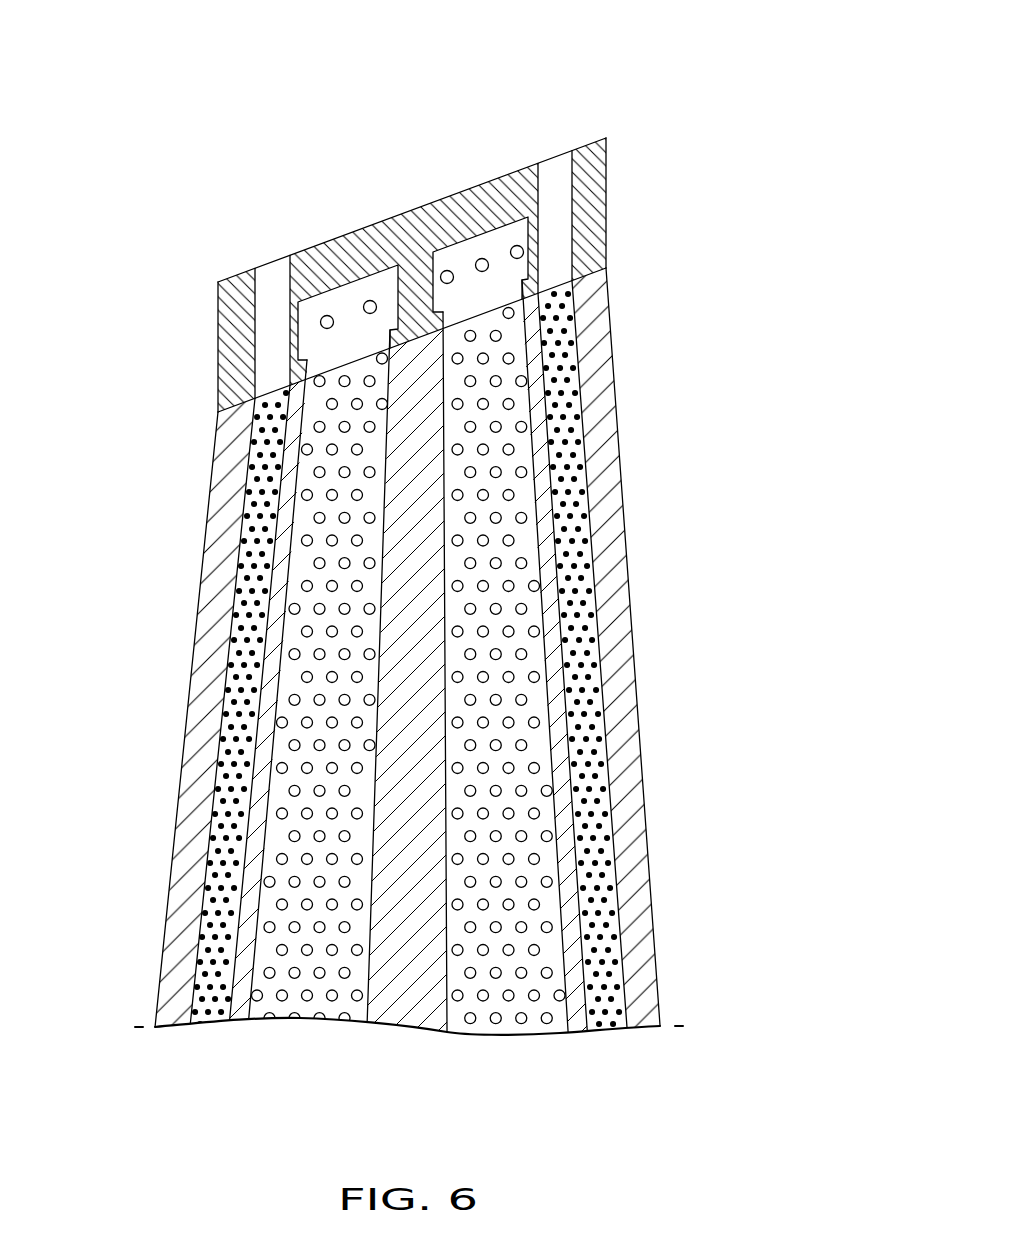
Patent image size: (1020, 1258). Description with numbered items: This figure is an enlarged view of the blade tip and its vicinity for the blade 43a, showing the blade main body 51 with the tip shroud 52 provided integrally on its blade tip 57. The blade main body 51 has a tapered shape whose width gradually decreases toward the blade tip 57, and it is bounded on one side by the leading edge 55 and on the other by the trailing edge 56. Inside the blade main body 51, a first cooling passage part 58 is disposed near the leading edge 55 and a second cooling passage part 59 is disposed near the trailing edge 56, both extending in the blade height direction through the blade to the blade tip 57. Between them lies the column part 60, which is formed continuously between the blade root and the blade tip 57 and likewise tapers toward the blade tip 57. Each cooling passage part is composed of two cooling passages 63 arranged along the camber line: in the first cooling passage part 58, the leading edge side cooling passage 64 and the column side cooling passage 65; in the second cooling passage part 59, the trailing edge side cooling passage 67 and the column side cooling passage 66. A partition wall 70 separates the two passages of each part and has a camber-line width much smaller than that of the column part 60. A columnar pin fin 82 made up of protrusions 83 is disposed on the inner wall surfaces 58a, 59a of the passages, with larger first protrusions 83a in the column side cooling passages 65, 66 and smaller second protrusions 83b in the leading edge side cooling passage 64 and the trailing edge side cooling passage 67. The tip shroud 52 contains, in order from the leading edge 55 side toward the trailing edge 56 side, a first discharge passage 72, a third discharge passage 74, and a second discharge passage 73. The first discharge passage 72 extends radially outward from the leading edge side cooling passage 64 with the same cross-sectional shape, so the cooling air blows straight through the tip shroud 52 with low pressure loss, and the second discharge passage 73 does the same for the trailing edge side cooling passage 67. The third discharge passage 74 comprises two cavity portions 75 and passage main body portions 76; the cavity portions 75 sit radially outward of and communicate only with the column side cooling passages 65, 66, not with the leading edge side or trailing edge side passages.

The blade 43a is at (631, 94).
The blade main body 51 is at (637, 578).
The tip shroud 52 is at (609, 184).
The leading edge 55 is at (197, 613).
The trailing edge 56 is at (640, 643).
The blade tip 57 is at (588, 276).
The first cooling passage part 58 is at (87, 407).
The inner wall surface 58a is at (280, 895).
The second cooling passage part 59 is at (783, 322).
The inner wall surface 59a is at (536, 805).
The column part 60 is at (408, 993).
The cooling passage 63 is at (437, 662).
The leading edge side cooling passage 64 is at (243, 538).
The column side cooling passage 65 is at (320, 458).
The column side cooling passage 66 is at (512, 382).
The trailing edge side cooling passage 67 is at (575, 440).
The partition wall 70 is at (573, 975).
The first discharge passage 72 is at (256, 317).
The second discharge passage 73 is at (572, 166).
The third discharge passage 74 is at (355, 287).
The cavity portion 75 is at (317, 296).
The passage main body portion 76 is at (325, 316).
The columnar pin fin 82 is at (549, 724).
The protrusion 83 is at (457, 799).
The first protrusion 83a is at (305, 723).
The second protrusion 83b is at (230, 812).